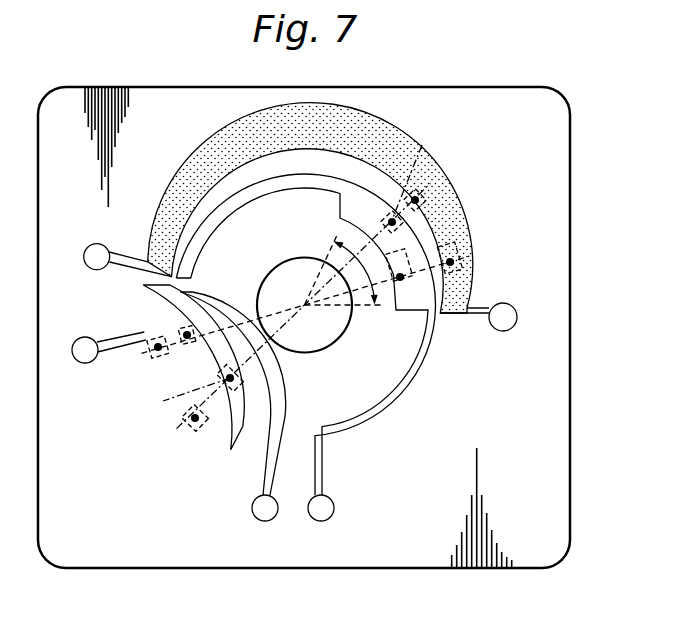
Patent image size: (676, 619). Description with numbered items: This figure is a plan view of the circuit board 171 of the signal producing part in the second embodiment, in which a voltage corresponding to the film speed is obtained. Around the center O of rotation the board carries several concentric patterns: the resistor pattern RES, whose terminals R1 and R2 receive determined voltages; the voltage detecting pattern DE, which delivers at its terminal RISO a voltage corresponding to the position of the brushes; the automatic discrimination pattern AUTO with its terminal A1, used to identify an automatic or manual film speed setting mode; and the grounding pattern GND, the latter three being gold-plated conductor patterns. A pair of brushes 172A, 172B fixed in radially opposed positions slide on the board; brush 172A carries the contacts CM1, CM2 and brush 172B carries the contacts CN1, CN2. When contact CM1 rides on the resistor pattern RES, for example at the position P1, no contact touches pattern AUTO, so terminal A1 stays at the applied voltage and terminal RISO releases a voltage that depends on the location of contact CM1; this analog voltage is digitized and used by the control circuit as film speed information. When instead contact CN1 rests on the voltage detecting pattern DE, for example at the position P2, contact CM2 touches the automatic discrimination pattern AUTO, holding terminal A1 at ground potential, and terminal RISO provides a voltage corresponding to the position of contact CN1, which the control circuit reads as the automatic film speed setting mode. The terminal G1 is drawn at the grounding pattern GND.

The circuit board 171 is at (562, 200).
The brush 172A is at (433, 176).
The brush 172B is at (176, 400).
The resistor pattern RES is at (357, 148).
The voltage detecting pattern DE is at (200, 253).
The terminal RISO is at (331, 524).
The terminal R1 is at (506, 325).
The terminal R2 is at (95, 246).
The grounding pattern GND is at (146, 306).
The ground terminal G1 is at (88, 363).
The automatic discrimination pattern AUTO is at (267, 424).
The terminal A1 is at (263, 524).
The brush contact CM1 is at (157, 353).
The brush contact CM2 is at (186, 342).
The brush contact CN1 is at (208, 432).
The brush contact CN2 is at (255, 385).
The position P1 is at (304, 305).
The position P2 is at (306, 304).
The rotation center O is at (304, 305).